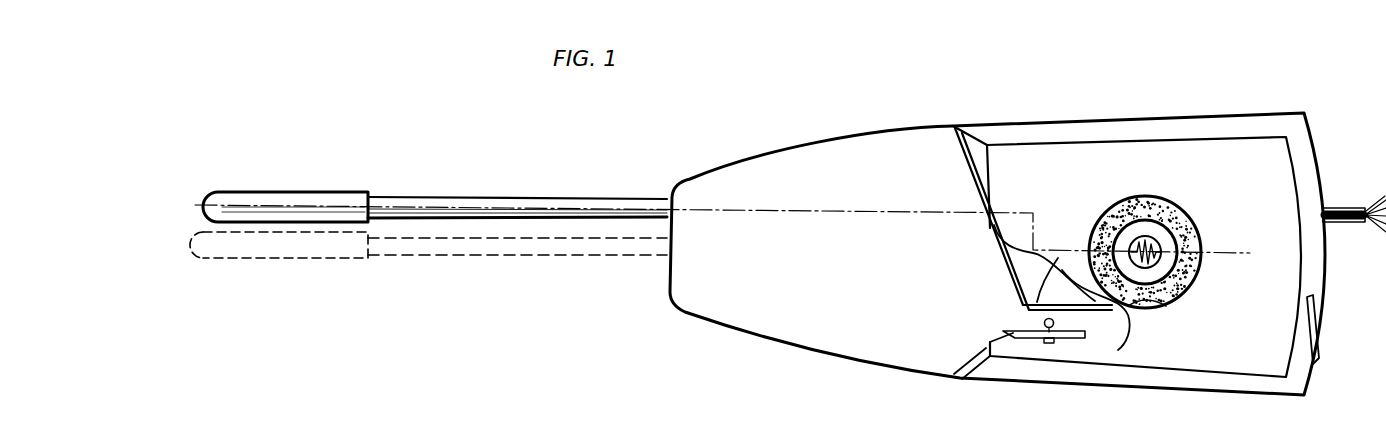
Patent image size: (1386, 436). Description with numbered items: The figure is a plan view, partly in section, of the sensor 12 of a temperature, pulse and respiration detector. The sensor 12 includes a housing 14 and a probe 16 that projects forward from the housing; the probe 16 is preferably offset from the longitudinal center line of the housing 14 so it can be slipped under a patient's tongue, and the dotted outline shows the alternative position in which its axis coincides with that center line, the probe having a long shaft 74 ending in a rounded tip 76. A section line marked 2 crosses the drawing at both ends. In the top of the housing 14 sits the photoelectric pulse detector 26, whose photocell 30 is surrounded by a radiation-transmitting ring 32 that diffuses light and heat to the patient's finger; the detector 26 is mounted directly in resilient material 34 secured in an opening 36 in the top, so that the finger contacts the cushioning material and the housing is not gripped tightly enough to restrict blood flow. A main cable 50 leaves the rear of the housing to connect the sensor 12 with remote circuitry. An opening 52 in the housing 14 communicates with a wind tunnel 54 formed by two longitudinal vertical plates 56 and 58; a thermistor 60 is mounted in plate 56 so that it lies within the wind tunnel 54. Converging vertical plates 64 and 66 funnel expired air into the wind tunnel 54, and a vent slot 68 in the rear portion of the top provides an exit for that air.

The section line 2- 2 is at (138, 245).
The sensor 12 is at (774, 120).
The housing 14 is at (1213, 112).
The probe 16 is at (428, 175).
The photoelectric pulse detector 26 is at (1167, 295).
The photocell 30 is at (1160, 243).
The radiation-transmitting ring 32 is at (1178, 258).
The resilient material 34 is at (1147, 196).
The opening 36 is at (1151, 302).
The main cable 50 is at (1340, 224).
The opening 52 is at (985, 275).
The wind tunnel 54 is at (1110, 319).
The vertical plate 56 is at (1033, 338).
The vertical plate 58 is at (1062, 253).
The thermistor 60 is at (1043, 323).
The vertical plate 64 is at (1005, 245).
The vertical plate 66 is at (990, 330).
The vent slot 68 is at (1316, 338).
The shaft 74 is at (543, 196).
The tip 76 is at (279, 200).